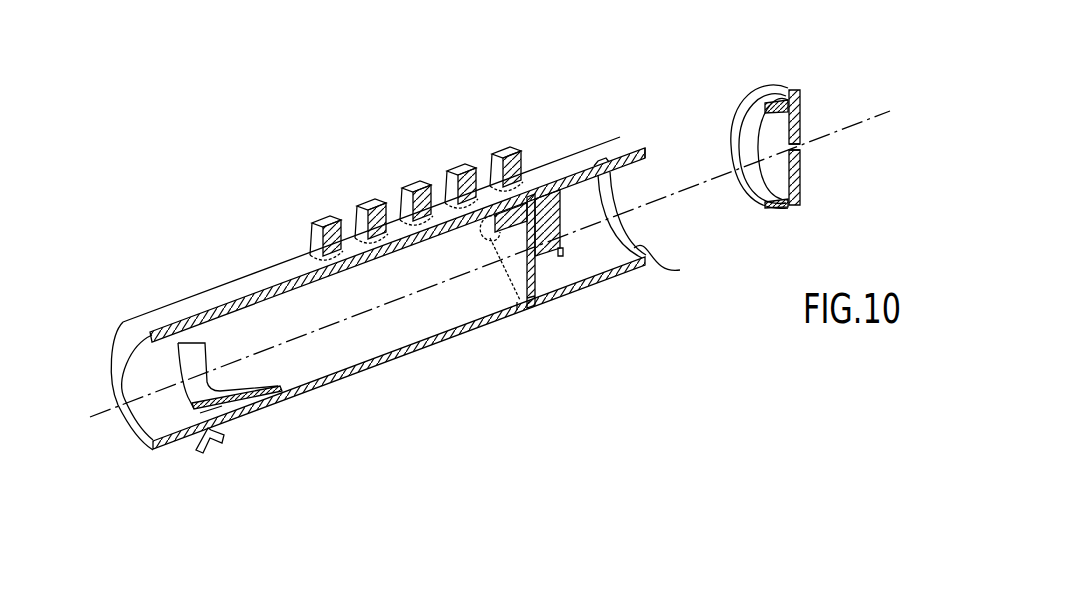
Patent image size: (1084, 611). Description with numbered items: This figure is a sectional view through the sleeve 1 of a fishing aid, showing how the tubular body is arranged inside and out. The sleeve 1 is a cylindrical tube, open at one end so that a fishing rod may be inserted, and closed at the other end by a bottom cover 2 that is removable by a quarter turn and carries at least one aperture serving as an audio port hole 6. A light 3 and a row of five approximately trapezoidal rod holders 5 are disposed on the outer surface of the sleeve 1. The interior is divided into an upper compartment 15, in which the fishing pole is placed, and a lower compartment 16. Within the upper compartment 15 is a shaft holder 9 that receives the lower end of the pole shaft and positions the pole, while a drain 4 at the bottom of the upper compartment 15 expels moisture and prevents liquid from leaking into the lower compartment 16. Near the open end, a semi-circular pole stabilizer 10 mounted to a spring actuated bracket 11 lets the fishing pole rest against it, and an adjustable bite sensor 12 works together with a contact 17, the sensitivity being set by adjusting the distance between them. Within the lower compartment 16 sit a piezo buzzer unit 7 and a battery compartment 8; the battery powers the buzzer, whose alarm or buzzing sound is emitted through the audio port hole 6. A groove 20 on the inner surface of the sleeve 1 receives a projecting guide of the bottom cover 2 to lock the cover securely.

The cylindrical sleeve 1 is at (203, 298).
The bottom cover 2 is at (798, 90).
The light 3 is at (600, 160).
The drain 4 is at (522, 308).
The rod holders 5 is at (362, 208).
The audio port hole 6 is at (801, 147).
The piezo buzzer unit 7 is at (543, 218).
The battery compartment 8 is at (610, 253).
The shaft holder 9 is at (487, 233).
The pole stabilizer 10 is at (178, 372).
The spring actuated bracket 11 is at (253, 403).
The adjustable bite sensor 12 is at (208, 450).
The upper compartment 15 is at (387, 325).
The lower compartment 16 is at (588, 194).
The contact 17 is at (215, 408).
The groove 20 is at (680, 270).